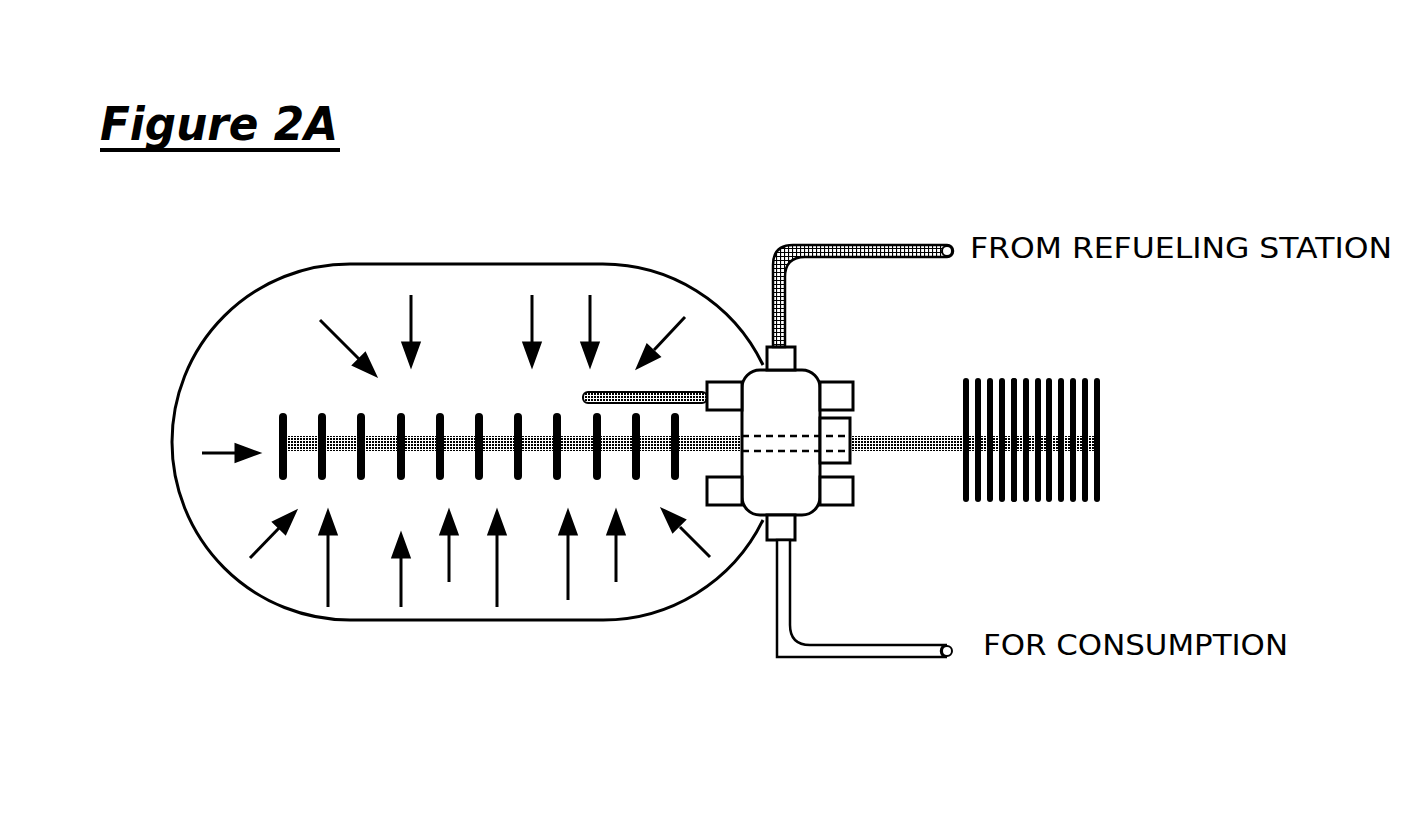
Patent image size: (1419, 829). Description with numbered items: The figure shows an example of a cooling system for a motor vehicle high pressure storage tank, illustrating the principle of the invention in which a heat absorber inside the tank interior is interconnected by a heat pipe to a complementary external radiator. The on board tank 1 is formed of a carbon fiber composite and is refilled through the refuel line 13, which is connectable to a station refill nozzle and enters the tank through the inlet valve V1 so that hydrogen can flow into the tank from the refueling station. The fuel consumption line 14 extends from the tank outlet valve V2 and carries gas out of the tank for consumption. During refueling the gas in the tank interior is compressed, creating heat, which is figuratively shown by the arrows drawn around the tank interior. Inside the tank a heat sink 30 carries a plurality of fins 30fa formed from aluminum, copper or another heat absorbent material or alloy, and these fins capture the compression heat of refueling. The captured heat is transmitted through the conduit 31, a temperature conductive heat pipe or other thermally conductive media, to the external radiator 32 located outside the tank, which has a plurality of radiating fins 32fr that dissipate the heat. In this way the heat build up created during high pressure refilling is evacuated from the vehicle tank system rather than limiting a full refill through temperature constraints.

The on board tank 1 is at (195, 537).
The refuel line 13 is at (857, 245).
The fuel consumption line 14 is at (778, 654).
The heat sink 30 is at (460, 436).
The fins 30fa is at (320, 413).
The conduit 31 is at (912, 436).
The external radiator 32 is at (1098, 467).
The radiating fins 32fr is at (1016, 491).
The inlet valve V1 is at (832, 382).
The outlet valve V2 is at (833, 505).